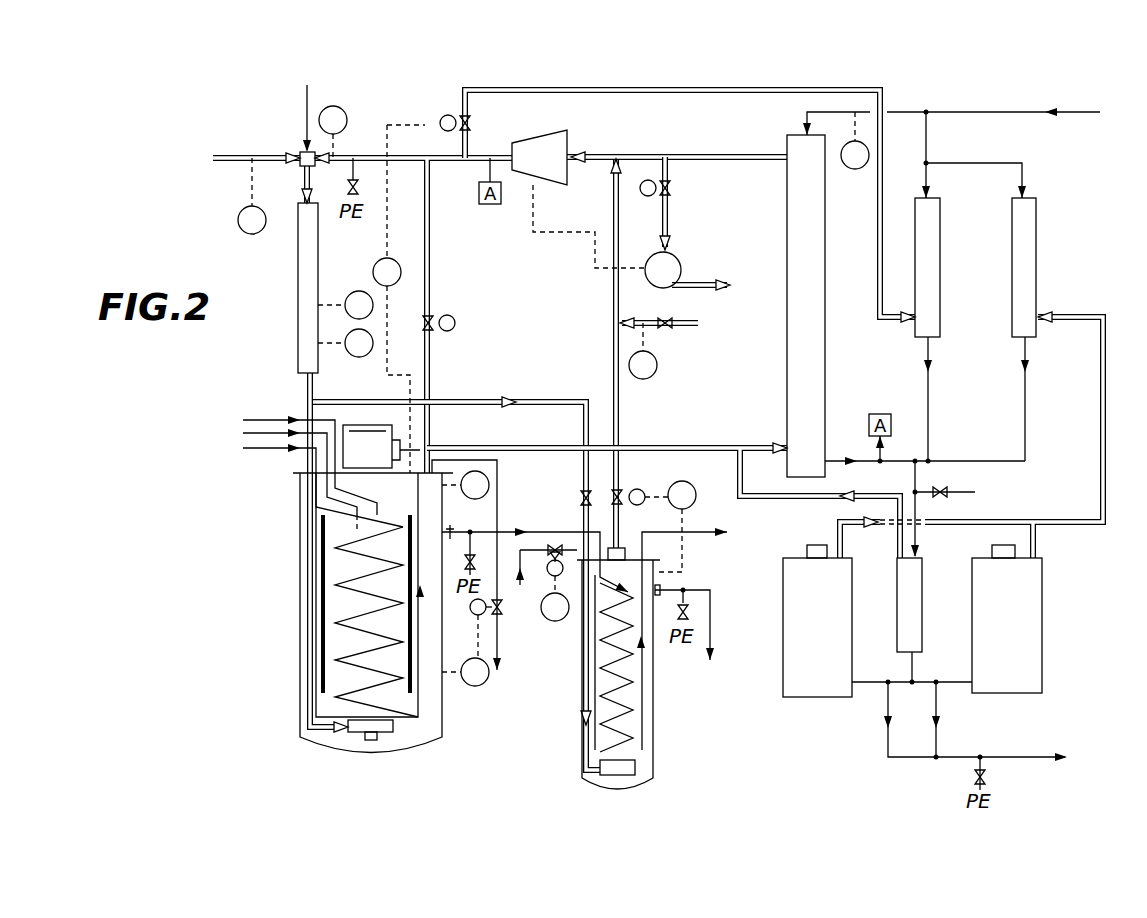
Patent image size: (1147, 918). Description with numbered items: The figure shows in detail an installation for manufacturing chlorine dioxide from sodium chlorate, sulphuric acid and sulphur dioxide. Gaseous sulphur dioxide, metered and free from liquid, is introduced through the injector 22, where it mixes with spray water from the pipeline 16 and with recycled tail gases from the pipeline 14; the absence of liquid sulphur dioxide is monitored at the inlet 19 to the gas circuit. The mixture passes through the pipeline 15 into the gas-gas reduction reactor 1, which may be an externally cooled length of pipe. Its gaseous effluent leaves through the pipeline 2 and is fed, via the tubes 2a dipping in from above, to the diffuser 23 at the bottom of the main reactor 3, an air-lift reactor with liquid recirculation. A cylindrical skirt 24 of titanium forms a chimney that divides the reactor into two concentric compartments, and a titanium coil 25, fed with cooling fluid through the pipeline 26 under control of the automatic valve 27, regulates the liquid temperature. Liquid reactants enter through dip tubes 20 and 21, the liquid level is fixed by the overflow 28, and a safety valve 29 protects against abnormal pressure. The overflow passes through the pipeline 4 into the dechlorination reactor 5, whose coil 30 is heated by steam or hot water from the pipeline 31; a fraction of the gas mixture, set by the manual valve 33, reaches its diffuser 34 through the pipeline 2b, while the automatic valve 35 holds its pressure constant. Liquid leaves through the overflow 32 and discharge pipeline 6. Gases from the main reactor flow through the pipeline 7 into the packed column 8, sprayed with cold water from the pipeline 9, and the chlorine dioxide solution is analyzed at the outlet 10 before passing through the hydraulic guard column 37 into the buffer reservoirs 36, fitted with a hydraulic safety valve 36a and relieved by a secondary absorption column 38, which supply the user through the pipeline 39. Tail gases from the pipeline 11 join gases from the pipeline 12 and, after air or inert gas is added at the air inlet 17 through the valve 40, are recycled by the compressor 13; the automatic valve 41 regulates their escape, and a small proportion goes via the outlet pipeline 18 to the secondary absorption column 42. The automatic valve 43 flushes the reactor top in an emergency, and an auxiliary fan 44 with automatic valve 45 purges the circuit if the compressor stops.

The reduction reactor 1 is at (335, 288).
The pipeline 2 is at (302, 388).
The tubes 2a is at (312, 597).
The pipeline 2b is at (452, 408).
The main reactor 3 is at (335, 605).
The pipeline 4 is at (504, 525).
The dechlorination reactor 5 is at (633, 675).
The discharge pipeline 6 is at (700, 592).
The pipeline 7 is at (482, 446).
The packed column 8 is at (817, 247).
The pipeline 9 is at (800, 110).
The outlet 10 is at (832, 458).
The pipeline 11 is at (708, 158).
The pipeline 12 is at (621, 420).
The compressor 13 is at (539, 157).
The pipeline 14 is at (398, 160).
The pipeline 15 is at (302, 185).
The pipeline 16 is at (305, 96).
The air inlet 17 is at (646, 320).
The outlet pipeline 18 is at (514, 90).
The inlet 19 is at (220, 150).
The dip tube 20 is at (283, 477).
The dip tube 21 is at (293, 456).
The injector 22 is at (299, 152).
The diffuser 23 is at (385, 732).
The cylindrical skirt 24 is at (405, 513).
The coil 25 is at (373, 562).
The pipeline 26 is at (306, 485).
The automatic valve 27 is at (503, 612).
The overflow 28 is at (458, 520).
The safety valve 29 is at (381, 446).
The coil 30 is at (628, 598).
The pipeline 31 is at (527, 575).
The overflow 32 is at (682, 622).
The manual valve 33 is at (552, 540).
The diffuser 34 is at (600, 763).
The automatic valve 35 is at (626, 492).
The buffer reservoirs 36 is at (912, 621).
The hydraulic safety valve 36a is at (805, 552).
The column 37 is at (948, 571).
The secondary absorption column 38 is at (1032, 249).
The pipeline 39 is at (978, 747).
The valve 40 is at (668, 331).
The automatic valve 41 is at (472, 120).
The secondary absorption column 42 is at (933, 249).
The automatic valve 43 is at (423, 323).
The auxiliary fan 44 is at (682, 275).
The automatic valve 45 is at (670, 190).